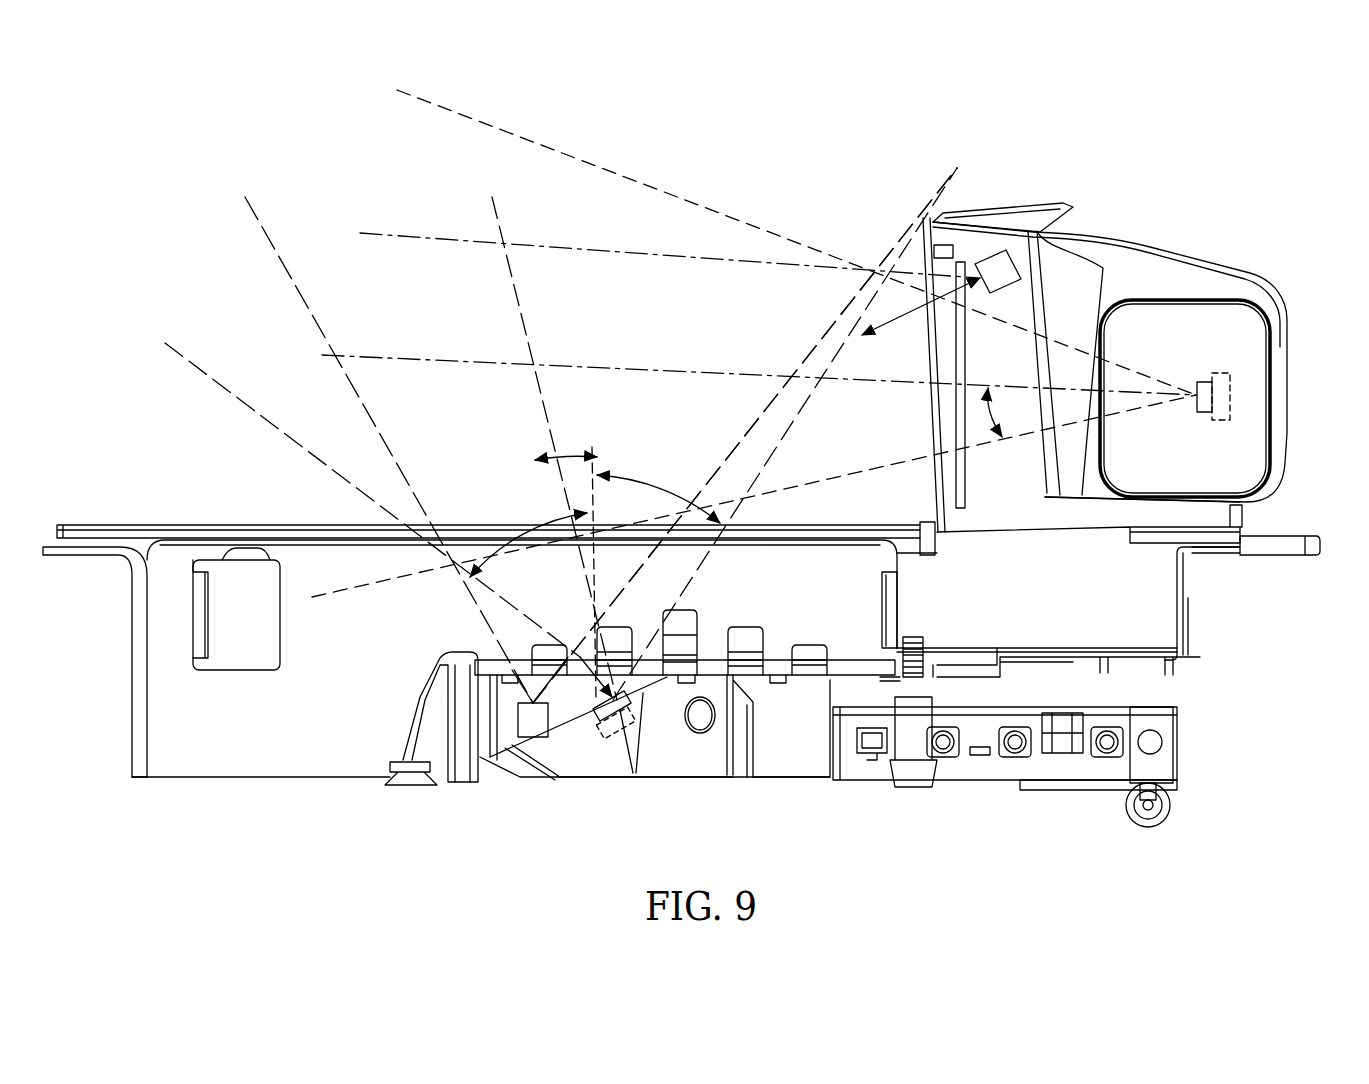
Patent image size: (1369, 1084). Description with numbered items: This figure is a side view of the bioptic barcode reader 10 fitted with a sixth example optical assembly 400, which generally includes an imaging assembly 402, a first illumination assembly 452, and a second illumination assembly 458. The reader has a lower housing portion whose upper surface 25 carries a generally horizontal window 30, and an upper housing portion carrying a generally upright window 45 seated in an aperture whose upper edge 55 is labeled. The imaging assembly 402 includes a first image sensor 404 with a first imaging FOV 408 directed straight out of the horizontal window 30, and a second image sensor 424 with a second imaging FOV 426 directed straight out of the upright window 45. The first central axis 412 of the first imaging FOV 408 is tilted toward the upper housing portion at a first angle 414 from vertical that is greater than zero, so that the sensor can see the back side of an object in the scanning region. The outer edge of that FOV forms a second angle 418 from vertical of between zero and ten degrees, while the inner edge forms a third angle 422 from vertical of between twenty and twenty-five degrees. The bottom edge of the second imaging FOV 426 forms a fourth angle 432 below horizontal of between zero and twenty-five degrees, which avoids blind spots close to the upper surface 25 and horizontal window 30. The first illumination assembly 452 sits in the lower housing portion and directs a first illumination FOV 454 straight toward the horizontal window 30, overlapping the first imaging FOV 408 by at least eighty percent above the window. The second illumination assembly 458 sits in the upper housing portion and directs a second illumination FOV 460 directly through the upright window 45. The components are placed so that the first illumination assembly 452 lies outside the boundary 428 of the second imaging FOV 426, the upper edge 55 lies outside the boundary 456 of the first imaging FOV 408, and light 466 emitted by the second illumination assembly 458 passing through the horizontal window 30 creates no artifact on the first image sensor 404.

The bioptic barcode reader 10 is at (1107, 135).
The upper surface 25 is at (220, 524).
The horizontal window 30 is at (470, 531).
The upright window 45 is at (968, 366).
The upper edge 55 is at (921, 219).
The sixth example optical assembly 400 is at (1250, 455).
The imaging assembly 402 is at (700, 762).
The first image sensor 404 is at (626, 735).
The first imaging FOV 408 is at (525, 622).
The first central axis 412 is at (507, 274).
The first angle 414 is at (590, 452).
The second angle 418 is at (540, 520).
The third angle 422 is at (655, 480).
The second image sensor 424 is at (1233, 388).
The second imaging FOV 426 is at (1152, 408).
The boundary 428 is at (500, 128).
The fourth angle 432 is at (990, 440).
The first illumination assembly 452 is at (536, 725).
The first illumination FOV 454 is at (475, 606).
The boundary 456 is at (278, 258).
The second illumination assembly 458 is at (1045, 232).
The second illumination FOV 460 is at (641, 248).
The light 466 is at (880, 300).